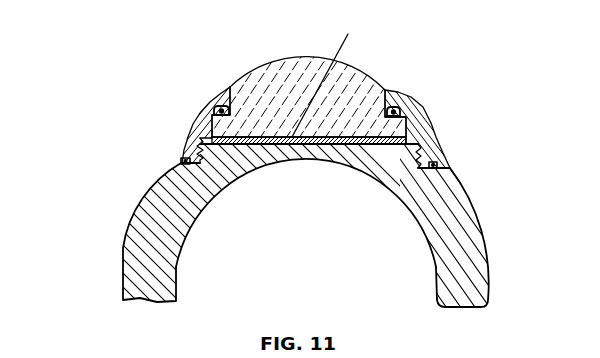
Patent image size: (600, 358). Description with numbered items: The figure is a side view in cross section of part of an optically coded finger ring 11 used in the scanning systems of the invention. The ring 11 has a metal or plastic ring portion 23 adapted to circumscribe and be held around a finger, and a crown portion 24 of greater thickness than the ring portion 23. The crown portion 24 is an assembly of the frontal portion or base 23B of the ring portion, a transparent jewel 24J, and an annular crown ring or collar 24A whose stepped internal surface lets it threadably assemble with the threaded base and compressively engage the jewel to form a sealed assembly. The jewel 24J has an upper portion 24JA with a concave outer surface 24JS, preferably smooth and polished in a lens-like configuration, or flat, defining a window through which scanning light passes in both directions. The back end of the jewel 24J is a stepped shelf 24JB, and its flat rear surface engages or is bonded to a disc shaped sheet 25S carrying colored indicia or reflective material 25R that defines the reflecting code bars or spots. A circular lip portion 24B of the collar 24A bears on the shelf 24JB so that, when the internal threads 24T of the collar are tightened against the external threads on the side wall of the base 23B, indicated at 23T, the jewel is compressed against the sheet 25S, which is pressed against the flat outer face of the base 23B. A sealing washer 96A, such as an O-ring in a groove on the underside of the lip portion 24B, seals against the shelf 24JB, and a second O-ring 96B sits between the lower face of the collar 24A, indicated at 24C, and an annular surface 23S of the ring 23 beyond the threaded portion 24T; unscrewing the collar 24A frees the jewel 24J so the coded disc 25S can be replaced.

The ring 11 is at (121, 258).
The ring portion 23 is at (133, 272).
The annular surface 23S is at (174, 166).
The serrated side surface 23T is at (193, 146).
The base 23B is at (421, 144).
The crown portion 24 is at (228, 86).
The collar 24A is at (407, 151).
The lip portion 24B is at (396, 109).
The seal 24C is at (440, 161).
The jewel 24J is at (342, 88).
The upper portion 24JA is at (274, 59).
The stepped shelf 24JB is at (412, 128).
The concave outer surface 24JS is at (242, 71).
The internal threads 24T is at (199, 139).
The colored indicia or reflective material 25R is at (335, 77).
The disc shaped sheet 25S is at (277, 141).
The sealing washer 96A is at (215, 102).
The O-ring 96B is at (443, 173).